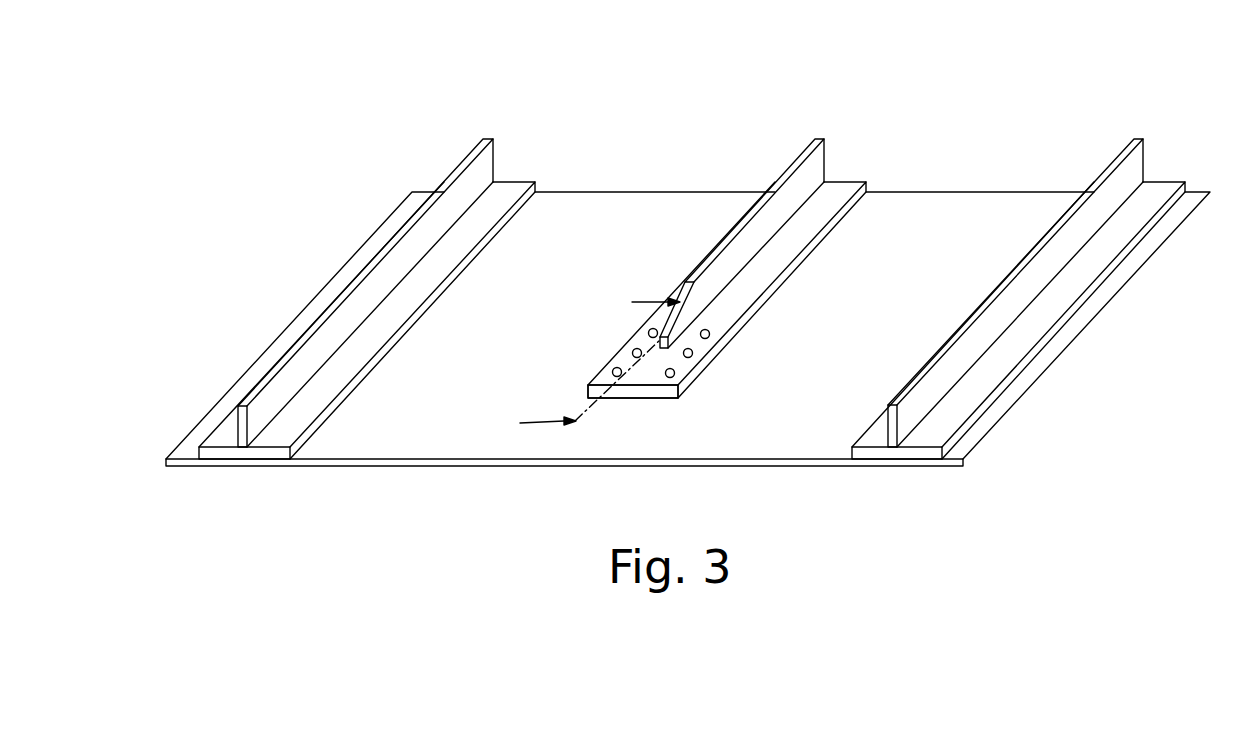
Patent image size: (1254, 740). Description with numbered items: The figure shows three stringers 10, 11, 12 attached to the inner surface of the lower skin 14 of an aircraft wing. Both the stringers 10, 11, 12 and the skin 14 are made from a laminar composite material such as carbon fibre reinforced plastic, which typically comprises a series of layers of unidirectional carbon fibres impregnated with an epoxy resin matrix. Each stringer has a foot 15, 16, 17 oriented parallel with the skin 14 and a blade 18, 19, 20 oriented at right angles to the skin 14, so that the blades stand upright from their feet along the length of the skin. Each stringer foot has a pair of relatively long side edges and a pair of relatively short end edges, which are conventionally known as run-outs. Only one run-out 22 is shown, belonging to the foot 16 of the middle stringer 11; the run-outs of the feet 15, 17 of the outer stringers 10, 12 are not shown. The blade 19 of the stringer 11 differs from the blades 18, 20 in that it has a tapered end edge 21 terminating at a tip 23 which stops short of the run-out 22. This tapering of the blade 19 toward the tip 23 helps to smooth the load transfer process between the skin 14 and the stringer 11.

The stringer 10 is at (384, 255).
The stringer 11 is at (698, 241).
The stringer 12 is at (1034, 254).
The lower skin 14 is at (495, 467).
The foot 15 is at (443, 253).
The foot 16 is at (783, 245).
The foot 17 is at (1070, 288).
The blade 18 is at (483, 167).
The blade 19 is at (812, 165).
The blade 20 is at (1133, 163).
The tapered end edge 21 is at (672, 318).
The run-out 22 is at (656, 390).
The tip 23 is at (670, 367).